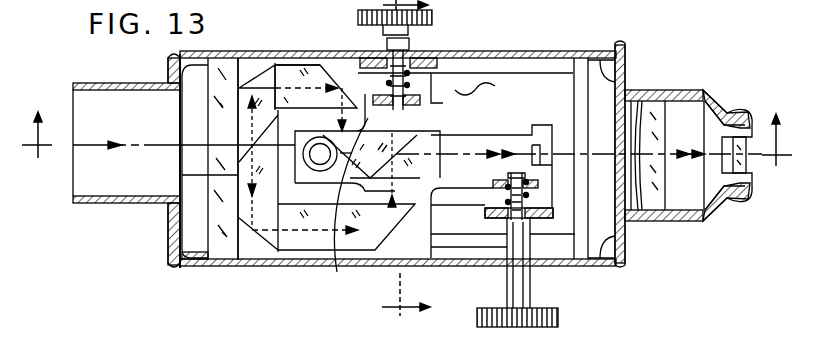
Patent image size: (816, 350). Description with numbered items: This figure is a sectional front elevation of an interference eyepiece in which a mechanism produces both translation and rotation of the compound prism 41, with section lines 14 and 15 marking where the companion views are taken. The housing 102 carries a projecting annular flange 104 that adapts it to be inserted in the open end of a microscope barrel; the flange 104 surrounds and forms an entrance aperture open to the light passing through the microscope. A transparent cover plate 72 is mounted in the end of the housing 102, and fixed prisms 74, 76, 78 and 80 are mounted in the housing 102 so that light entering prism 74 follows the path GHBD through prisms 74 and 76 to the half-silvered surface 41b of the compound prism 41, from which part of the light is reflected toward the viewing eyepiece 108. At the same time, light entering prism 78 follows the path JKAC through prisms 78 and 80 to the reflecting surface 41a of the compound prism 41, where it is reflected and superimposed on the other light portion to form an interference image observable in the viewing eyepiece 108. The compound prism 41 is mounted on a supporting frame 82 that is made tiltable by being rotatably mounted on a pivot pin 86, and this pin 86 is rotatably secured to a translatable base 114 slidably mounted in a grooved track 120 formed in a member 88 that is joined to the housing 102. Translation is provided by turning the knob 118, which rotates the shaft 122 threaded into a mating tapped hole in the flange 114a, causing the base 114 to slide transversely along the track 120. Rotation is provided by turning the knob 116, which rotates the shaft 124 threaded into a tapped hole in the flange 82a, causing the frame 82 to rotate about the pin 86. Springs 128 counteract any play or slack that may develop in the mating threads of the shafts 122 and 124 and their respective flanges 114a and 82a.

The section line 14- 14 is at (407, 127).
The section line 15- 15 is at (421, 159).
The compound prism 41 is at (224, 148).
The reflecting surface 41a is at (348, 205).
The half-silvered surface 41b is at (426, 154).
The transparent cover plate 72 is at (210, 218).
The fixed prism 74 is at (246, 258).
The fixed prism 76 is at (328, 178).
The fixed prism 78 is at (262, 58).
The fixed prism 80 is at (332, 148).
The supporting frame 82 is at (518, 157).
The flange 82a is at (546, 176).
The pivot pin 86 is at (278, 65).
The member 88 is at (541, 83).
The housing 102 is at (524, 51).
The annular flange 104 is at (127, 83).
The viewing eyepiece 108 is at (692, 226).
The translatable base 114 is at (406, 165).
The flange 114a is at (412, 100).
The knob 116 is at (558, 316).
The knob 118 is at (358, 18).
The grooved track 120 is at (432, 127).
The threaded shaft 122 is at (414, 49).
The threaded shaft 124 is at (522, 158).
The springs 128 is at (358, 78).